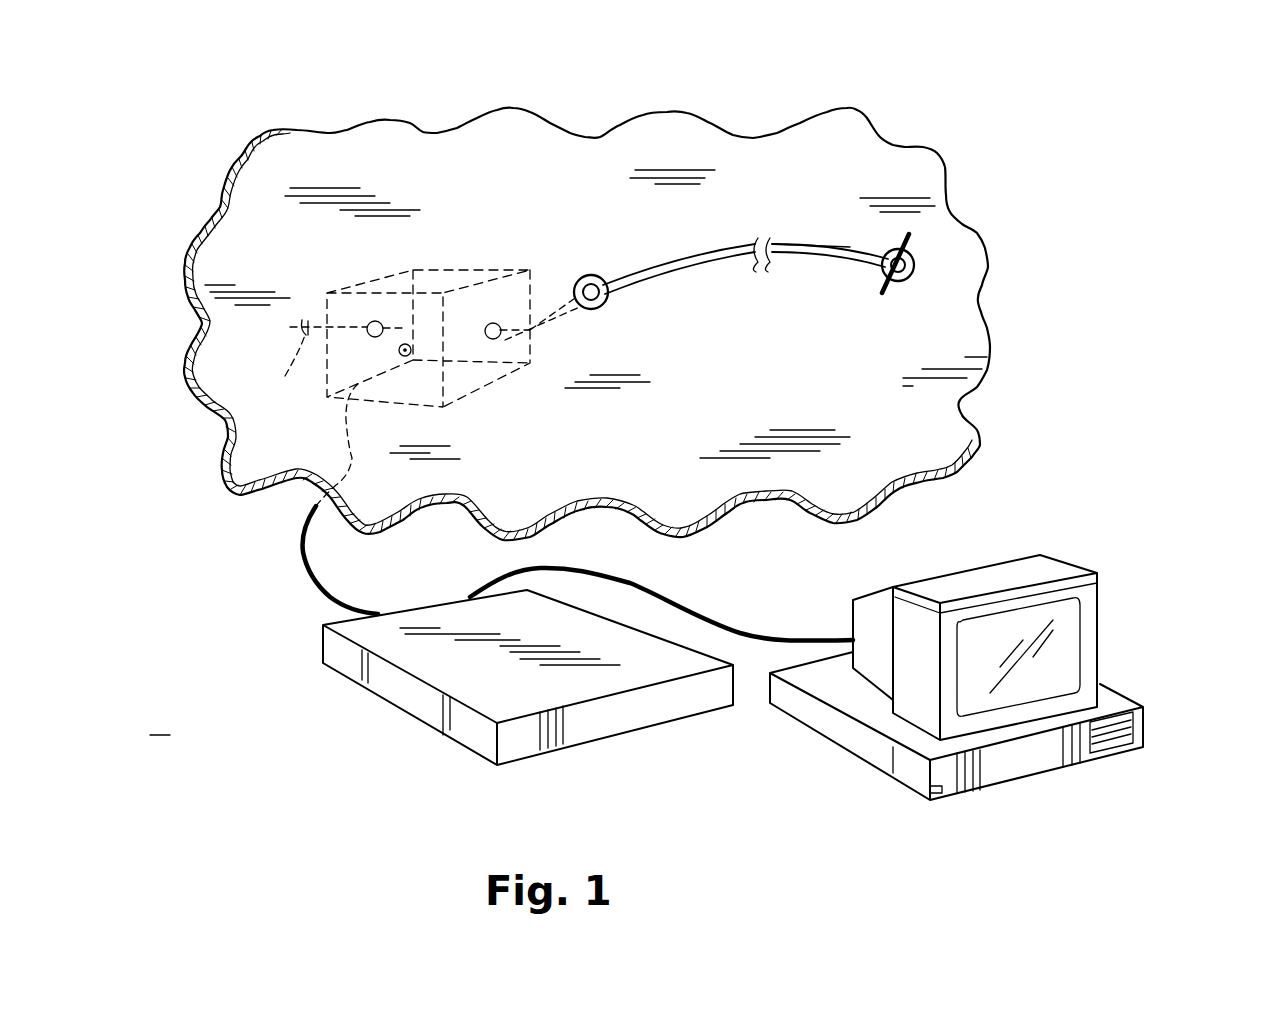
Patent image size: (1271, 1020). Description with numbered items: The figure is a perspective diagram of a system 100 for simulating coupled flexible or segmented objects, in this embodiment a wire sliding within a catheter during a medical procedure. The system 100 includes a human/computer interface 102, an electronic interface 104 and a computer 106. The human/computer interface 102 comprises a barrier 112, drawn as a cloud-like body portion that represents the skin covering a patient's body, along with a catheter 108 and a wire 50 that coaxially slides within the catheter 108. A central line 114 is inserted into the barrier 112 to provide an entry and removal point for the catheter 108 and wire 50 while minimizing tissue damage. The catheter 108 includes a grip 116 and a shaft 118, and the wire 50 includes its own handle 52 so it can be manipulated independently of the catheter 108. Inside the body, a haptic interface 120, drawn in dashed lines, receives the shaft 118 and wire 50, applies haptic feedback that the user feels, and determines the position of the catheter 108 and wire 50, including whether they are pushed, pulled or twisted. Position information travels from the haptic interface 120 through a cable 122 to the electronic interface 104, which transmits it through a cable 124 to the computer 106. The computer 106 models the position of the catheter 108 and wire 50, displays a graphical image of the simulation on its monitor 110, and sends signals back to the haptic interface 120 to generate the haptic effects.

The system 100 is at (253, 692).
The human/computer interface 102 is at (250, 109).
The electronic interface 104 is at (453, 660).
The computer 106 is at (985, 663).
The catheter 108 is at (724, 209).
The monitor 110 is at (1052, 660).
The barrier 112 is at (575, 172).
The central line 114 is at (615, 302).
The grip 116 is at (915, 262).
The shaft 118 is at (808, 258).
The haptic interface 120 is at (422, 270).
The cable 122 is at (297, 547).
The cable 124 is at (667, 587).
The wire 50 is at (846, 250).
The handle 52 is at (906, 242).